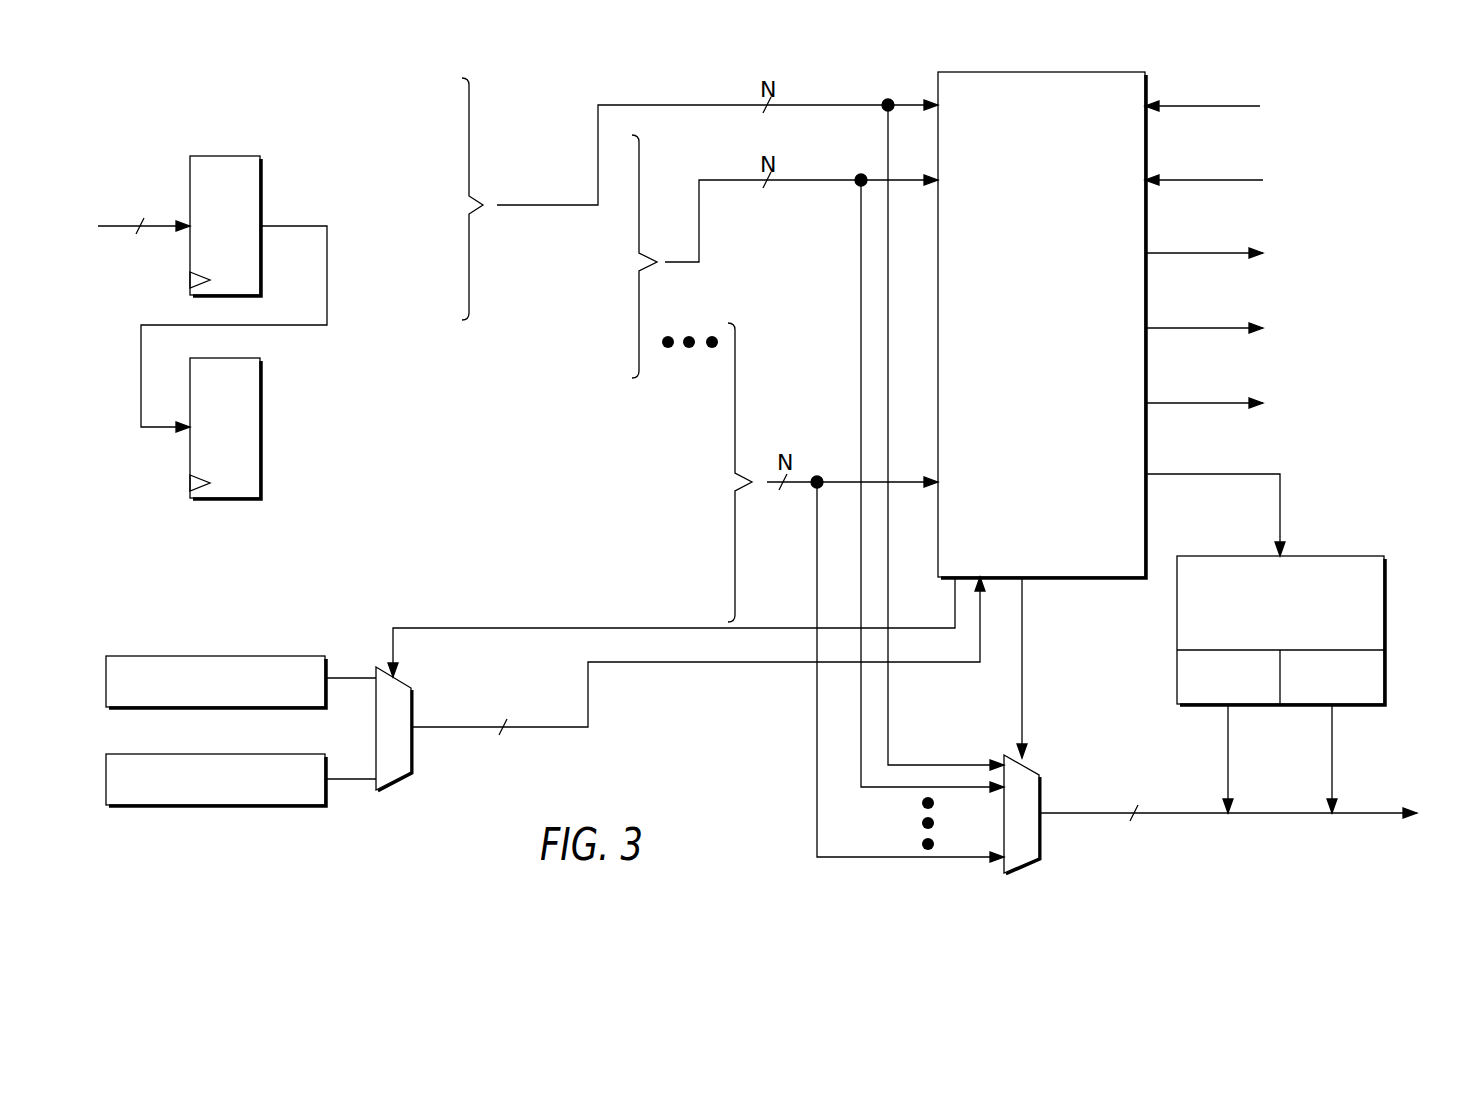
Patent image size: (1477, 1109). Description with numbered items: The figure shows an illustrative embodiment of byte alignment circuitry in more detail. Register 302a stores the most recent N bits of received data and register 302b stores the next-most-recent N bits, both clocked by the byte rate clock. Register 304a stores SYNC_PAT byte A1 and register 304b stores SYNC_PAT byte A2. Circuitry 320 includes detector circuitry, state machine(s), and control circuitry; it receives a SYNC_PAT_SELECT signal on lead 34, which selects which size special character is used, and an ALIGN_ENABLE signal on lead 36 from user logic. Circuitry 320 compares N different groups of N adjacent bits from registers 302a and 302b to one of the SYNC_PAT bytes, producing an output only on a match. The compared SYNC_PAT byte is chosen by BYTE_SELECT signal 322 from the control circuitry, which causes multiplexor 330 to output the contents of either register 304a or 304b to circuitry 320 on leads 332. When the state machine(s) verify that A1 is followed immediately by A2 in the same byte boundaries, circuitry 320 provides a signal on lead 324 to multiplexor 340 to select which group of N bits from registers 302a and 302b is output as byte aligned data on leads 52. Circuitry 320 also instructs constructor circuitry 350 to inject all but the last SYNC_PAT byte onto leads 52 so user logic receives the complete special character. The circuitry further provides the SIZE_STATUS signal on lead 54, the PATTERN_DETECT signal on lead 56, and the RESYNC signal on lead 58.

The register 302a is at (260, 193).
The register 302b is at (260, 473).
The register 304a is at (171, 656).
The register 304b is at (173, 805).
The circuitry 320 is at (957, 72).
The BYTE_SELECT signal 322 is at (438, 628).
The lead 324 is at (1022, 687).
The multiplexor 330 is at (398, 780).
The leads 332 is at (588, 713).
The multiplexor 340 is at (1027, 763).
The constructor circuitry 350 is at (1384, 558).
The lead 36 is at (1198, 106).
The lead 34 is at (1212, 180).
The lead 56 is at (1210, 252).
The lead 58 is at (1221, 327).
The lead 54 is at (1211, 402).
The leads 52 is at (1110, 815).